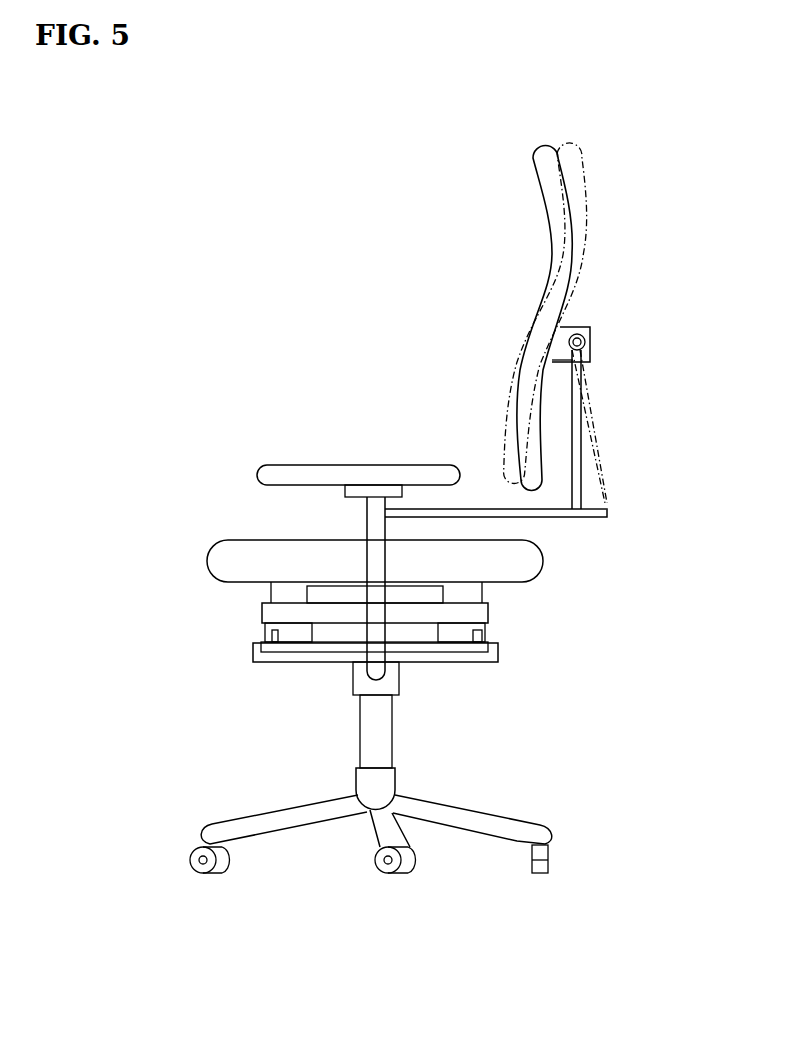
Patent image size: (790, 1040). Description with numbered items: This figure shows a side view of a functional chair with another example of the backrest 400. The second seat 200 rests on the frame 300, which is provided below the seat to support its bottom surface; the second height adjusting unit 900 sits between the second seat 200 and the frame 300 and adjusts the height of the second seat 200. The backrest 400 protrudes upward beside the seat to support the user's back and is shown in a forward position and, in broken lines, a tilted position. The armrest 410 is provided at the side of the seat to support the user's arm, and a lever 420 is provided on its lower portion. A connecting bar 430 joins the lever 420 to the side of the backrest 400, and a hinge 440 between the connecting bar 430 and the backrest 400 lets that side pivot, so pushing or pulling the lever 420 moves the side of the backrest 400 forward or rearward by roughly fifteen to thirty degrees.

The backrest 400 is at (532, 195).
The hinge 440 is at (585, 342).
The connecting bar 430 is at (580, 413).
The lever 420 is at (551, 515).
The armrest 410 is at (258, 470).
The second seat 200 is at (185, 548).
The second height adjusting unit 900 is at (245, 626).
The frame 300 is at (185, 810).